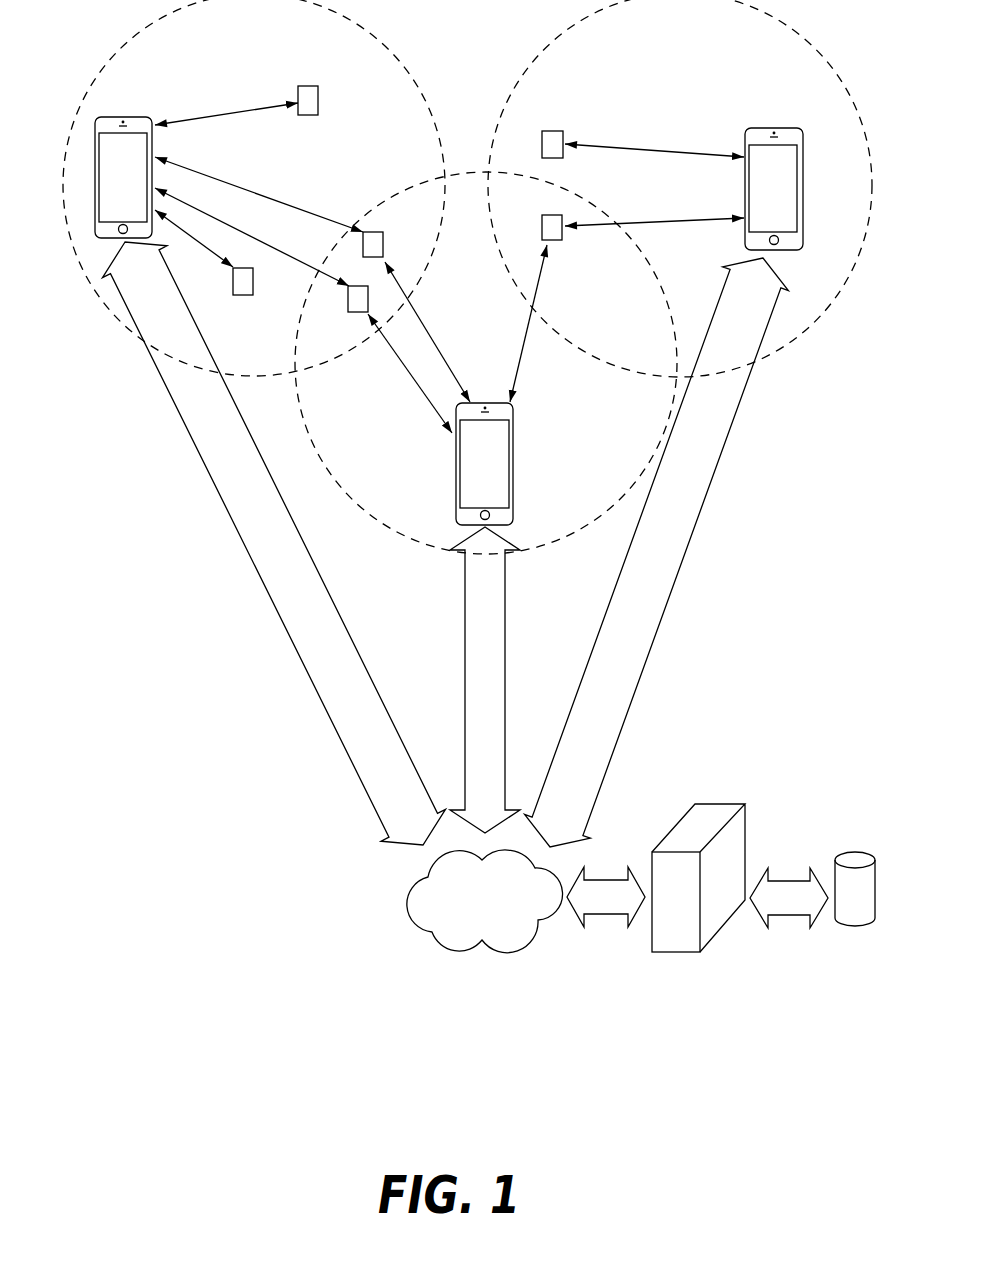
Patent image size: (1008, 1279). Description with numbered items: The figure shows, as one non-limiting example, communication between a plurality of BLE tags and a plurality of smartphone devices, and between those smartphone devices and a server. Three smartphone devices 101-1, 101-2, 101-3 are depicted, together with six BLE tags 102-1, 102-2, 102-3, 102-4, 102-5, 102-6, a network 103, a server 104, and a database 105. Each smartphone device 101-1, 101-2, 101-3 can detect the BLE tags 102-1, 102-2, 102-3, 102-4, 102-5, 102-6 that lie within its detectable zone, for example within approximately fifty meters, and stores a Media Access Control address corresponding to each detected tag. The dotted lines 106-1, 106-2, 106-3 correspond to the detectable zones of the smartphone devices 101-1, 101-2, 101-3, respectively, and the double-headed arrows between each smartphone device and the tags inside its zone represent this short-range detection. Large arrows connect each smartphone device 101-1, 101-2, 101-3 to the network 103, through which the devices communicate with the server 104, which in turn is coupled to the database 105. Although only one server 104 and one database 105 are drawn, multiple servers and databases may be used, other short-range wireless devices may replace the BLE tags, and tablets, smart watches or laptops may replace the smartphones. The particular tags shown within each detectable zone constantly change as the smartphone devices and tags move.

The smartphone device 101-1 is at (784, 128).
The smartphone device 101-2 is at (513, 517).
The smartphone device 101-3 is at (140, 117).
The BLE tag 102-1 is at (548, 130).
The BLE tag 102-2 is at (548, 245).
The BLE tag 102-3 is at (383, 243).
The BLE tag 102-4 is at (363, 313).
The BLE tag 102-5 is at (318, 97).
The BLE tag 102-6 is at (250, 297).
The network 103 is at (448, 952).
The server 104 is at (687, 952).
The database 105 is at (853, 926).
The dotted line 106-1 is at (805, 332).
The dotted line 106-2 is at (412, 523).
The dotted line 106-3 is at (117, 315).